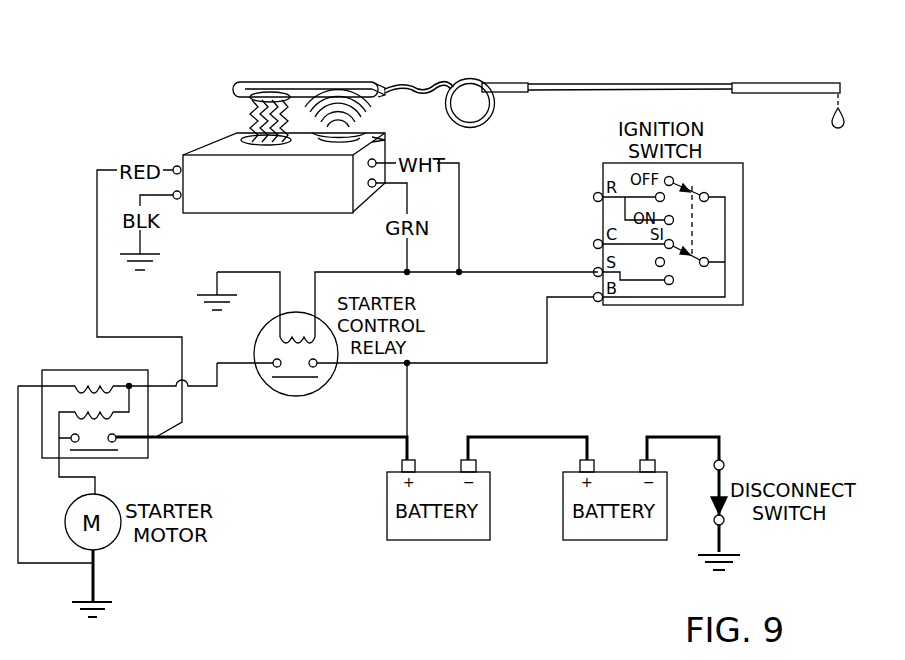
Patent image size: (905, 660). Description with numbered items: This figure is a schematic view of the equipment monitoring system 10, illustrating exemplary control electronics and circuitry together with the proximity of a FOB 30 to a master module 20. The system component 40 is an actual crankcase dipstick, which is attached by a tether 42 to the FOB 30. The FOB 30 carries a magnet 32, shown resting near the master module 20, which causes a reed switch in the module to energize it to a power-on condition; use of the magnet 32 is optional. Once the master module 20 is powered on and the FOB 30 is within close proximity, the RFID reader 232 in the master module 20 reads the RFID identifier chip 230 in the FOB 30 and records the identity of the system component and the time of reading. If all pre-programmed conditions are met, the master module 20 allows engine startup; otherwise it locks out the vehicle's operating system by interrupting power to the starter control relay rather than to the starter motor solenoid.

The equipment monitoring system 10 is at (370, 576).
The master module 20 is at (181, 150).
The FOB 30 is at (297, 82).
The magnet 32 is at (258, 90).
The system component 40 is at (608, 83).
The tether 42 is at (408, 87).
The RFID identifier chip 230 is at (327, 82).
The RFID reader 232 is at (385, 140).